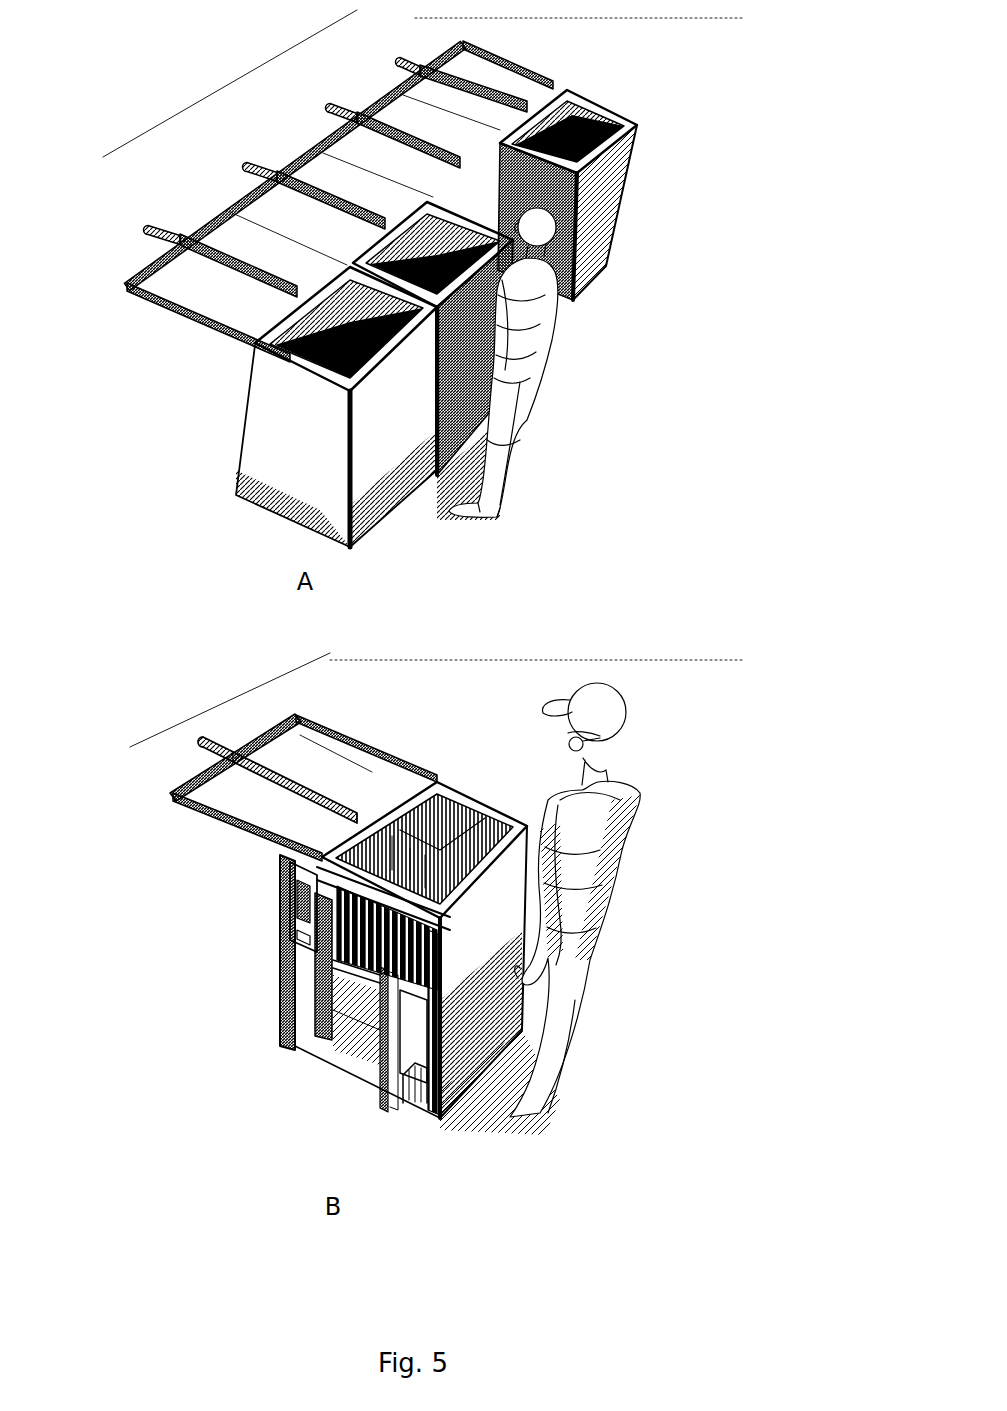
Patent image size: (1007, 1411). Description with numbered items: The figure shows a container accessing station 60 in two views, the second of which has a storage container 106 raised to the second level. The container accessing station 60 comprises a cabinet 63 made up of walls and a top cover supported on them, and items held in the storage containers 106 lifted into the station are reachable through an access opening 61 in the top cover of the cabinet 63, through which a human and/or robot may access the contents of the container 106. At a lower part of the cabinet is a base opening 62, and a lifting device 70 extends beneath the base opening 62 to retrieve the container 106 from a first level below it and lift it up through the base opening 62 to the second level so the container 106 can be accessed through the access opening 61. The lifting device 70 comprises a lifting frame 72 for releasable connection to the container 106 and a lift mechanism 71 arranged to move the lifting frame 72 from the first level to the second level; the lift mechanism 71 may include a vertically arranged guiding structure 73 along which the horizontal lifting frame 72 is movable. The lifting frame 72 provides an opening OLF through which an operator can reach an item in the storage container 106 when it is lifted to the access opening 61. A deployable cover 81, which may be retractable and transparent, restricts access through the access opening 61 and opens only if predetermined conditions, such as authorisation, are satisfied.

The container accessing station 60 is at (606, 203).
The access opening 61 is at (491, 170).
The base opening 62 is at (356, 1055).
The cabinet 63 is at (247, 468).
The lifting device 70 is at (290, 878).
The lift mechanism 71 is at (266, 918).
The lifting frame 72 is at (413, 920).
The guiding structure 73 is at (320, 1023).
The deployable cover 81 is at (383, 853).
The storage container 106 is at (287, 350).
The opening of the lifting frame OLF is at (397, 263).